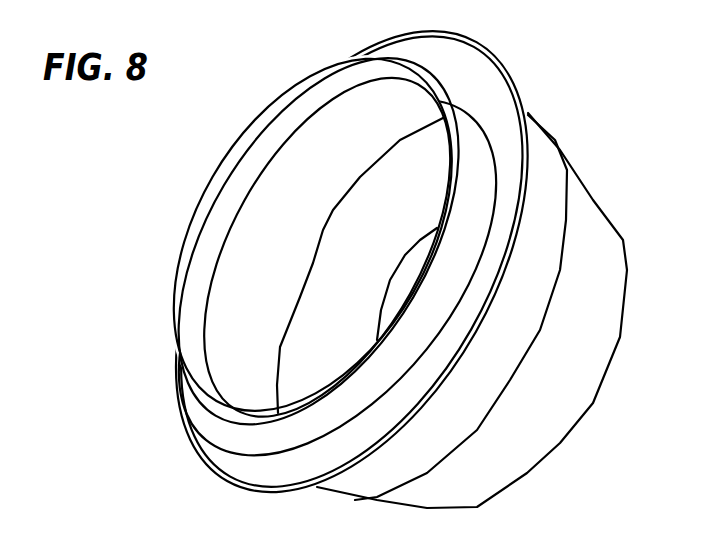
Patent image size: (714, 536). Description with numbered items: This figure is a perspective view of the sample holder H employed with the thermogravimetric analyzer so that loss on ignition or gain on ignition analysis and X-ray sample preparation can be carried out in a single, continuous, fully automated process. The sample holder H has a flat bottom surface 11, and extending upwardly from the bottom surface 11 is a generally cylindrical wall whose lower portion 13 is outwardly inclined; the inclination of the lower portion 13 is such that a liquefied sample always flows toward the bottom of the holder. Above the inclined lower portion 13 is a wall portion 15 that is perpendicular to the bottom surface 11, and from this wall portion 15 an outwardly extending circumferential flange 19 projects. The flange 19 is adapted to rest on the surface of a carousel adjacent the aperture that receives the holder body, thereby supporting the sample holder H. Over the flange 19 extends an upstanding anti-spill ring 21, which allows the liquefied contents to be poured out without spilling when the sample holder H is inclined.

The sample holder H is at (166, 249).
The flat bottom surface 11 is at (405, 292).
The outwardly inclined lower portion 13 is at (544, 423).
The perpendicular wall portion 15 is at (489, 395).
The circumferential flange 19 is at (488, 90).
The anti-spill ring 21 is at (286, 102).